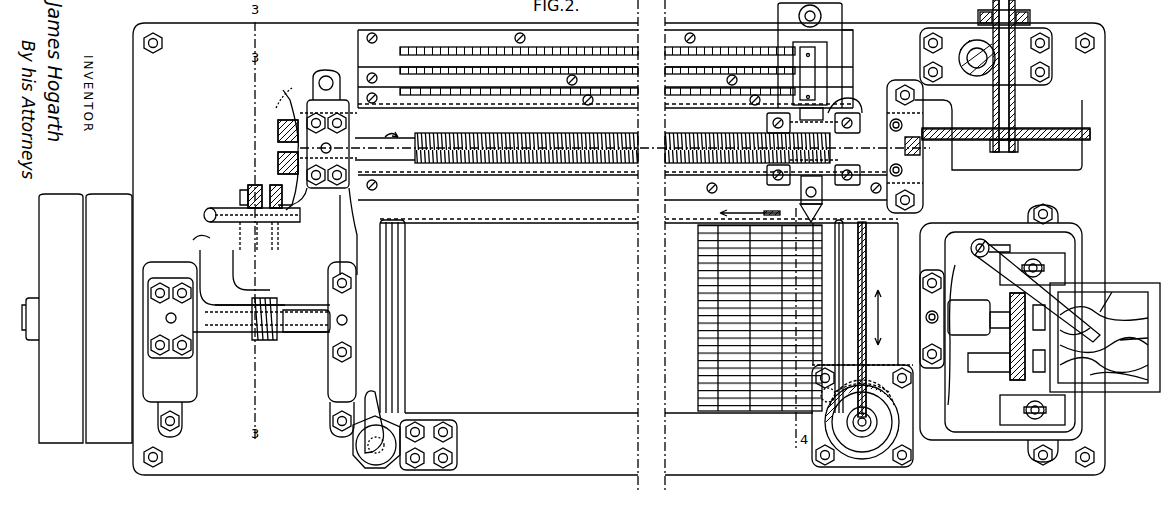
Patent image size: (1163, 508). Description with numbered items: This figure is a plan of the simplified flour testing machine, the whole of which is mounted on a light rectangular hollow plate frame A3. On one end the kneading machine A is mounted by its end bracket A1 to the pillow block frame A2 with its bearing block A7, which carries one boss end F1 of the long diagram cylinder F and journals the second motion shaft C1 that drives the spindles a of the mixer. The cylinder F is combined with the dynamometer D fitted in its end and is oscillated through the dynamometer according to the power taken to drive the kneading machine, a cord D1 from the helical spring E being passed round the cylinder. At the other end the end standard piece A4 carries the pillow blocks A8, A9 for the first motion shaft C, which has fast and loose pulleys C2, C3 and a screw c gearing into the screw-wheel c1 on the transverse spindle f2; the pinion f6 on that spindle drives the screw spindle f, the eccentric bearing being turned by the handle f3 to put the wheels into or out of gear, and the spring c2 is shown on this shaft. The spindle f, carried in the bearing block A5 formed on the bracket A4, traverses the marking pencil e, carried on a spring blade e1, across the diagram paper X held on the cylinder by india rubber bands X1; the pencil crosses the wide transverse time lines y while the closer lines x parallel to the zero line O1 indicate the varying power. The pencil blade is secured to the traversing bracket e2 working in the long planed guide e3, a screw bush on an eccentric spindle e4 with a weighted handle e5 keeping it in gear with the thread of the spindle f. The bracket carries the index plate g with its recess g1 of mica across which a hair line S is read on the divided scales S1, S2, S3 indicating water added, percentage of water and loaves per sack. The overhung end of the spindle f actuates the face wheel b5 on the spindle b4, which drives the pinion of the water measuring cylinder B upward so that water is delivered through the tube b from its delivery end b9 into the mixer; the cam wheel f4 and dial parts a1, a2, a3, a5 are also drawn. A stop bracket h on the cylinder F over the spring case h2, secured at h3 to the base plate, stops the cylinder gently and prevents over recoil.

The kneading machine A is at (1128, 285).
The end bracket A1 is at (1032, 339).
The pillow block frame A2 is at (1001, 334).
The hollow plate frame A3 is at (619, 249).
The end standard piece A4 is at (275, 246).
The bearing block A5 is at (328, 129).
The bearing block A7 is at (932, 319).
The pillow block A8 is at (342, 349).
The pillow block A9 is at (170, 347).
The measuring cylinder B is at (1023, 60).
The second motion shaft C1 is at (955, 285).
The fast pulley C2 is at (109, 318).
The loose pulley C3 is at (61, 318).
The screw c is at (22, 318).
The screw-wheel c1 is at (222, 332).
The spring c2 is at (265, 340).
The dynamometer D is at (862, 418).
The cord D1 is at (866, 270).
The helical spring E is at (872, 405).
The diagram cylinder F is at (630, 318).
The boss end F1 is at (912, 316).
The zero line O1 is at (639, 213).
The hair line S is at (809, 73).
The divided scale S1 is at (432, 92).
The divided scale S2 is at (440, 70).
The divided scale S3 is at (400, 47).
The diagram paper X is at (632, 318).
The india rubber bands X1 is at (405, 283).
The division lines x is at (763, 313).
The division lines y is at (776, 312).
The spindles a is at (1006, 338).
The pointer a1 is at (1106, 317).
The gear a2 is at (1015, 350).
The pinion a3 is at (1008, 380).
The dial a5 is at (1109, 367).
The metal tube b is at (1000, 262).
The driving spindle b4 is at (1014, 112).
The face wheel b5 is at (950, 140).
The delivery end b9 is at (1082, 322).
The marking pencil e is at (818, 212).
The spring blade e1 is at (800, 188).
The traversing bracket e2 is at (820, 150).
The planed guide e3 is at (352, 104).
The eccentric spindle e4 is at (820, 128).
The weighted handle e5 is at (848, 110).
The screw spindle f is at (615, 123).
The transverse spindle f2 is at (253, 232).
The handle f3 is at (220, 208).
The cam wheel f4 is at (276, 122).
The pinion f6 is at (270, 190).
The index plate g is at (815, 55).
The open recess g1 is at (820, 55).
The stop bracket h is at (372, 437).
The cylinder case h2 is at (364, 455).
The securing point h3 is at (447, 447).